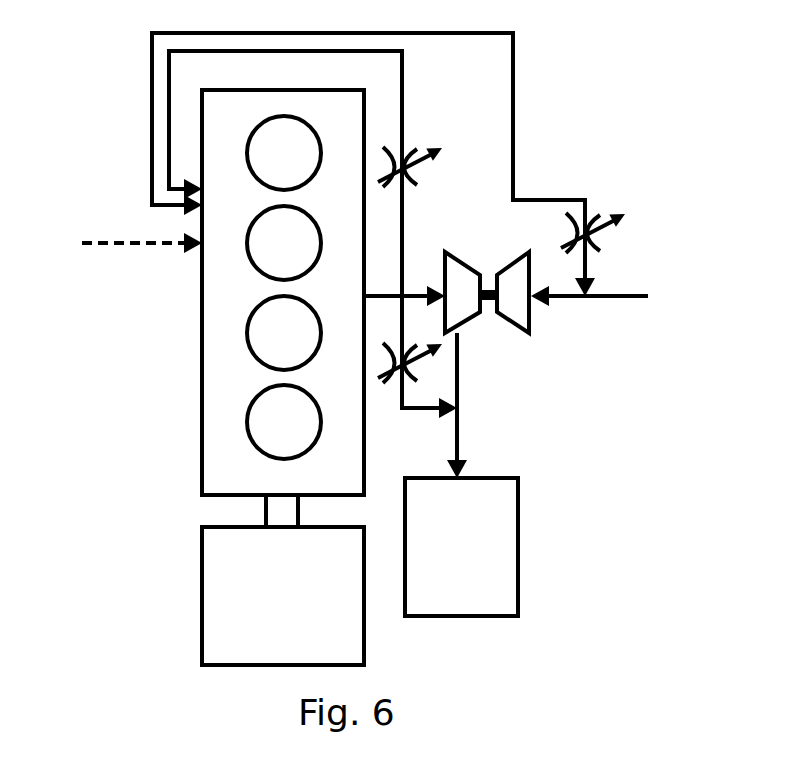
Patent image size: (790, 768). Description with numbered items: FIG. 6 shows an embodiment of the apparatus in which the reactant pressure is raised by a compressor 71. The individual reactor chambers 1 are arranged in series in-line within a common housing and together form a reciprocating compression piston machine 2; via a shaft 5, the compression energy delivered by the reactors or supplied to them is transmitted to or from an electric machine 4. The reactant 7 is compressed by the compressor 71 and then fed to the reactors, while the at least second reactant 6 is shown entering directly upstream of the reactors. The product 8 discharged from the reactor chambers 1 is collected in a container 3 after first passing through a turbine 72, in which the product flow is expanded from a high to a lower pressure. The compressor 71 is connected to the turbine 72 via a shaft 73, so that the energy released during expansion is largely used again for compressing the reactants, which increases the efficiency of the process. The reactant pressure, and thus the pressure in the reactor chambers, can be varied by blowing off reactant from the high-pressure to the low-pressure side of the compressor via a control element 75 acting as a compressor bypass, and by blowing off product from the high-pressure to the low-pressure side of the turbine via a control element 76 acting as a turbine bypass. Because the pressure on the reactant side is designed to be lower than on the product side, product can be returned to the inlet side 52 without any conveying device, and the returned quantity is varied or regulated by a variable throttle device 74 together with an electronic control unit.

The reactor chambers 1 is at (302, 152).
The reciprocating compression piston machine 2 is at (267, 474).
The container 3 is at (461, 547).
The electric machine 4 is at (322, 615).
The shaft 5 is at (287, 510).
The reactant 6 is at (142, 234).
The reactant 7 is at (413, 176).
The product 8 is at (561, 405).
The inlet side 52 is at (313, 234).
The compressor 71 is at (529, 305).
The turbine 72 is at (455, 320).
The shaft 73 is at (485, 300).
The variable throttle device 74 is at (422, 175).
The control element 75 is at (602, 241).
The control element 76 is at (415, 362).